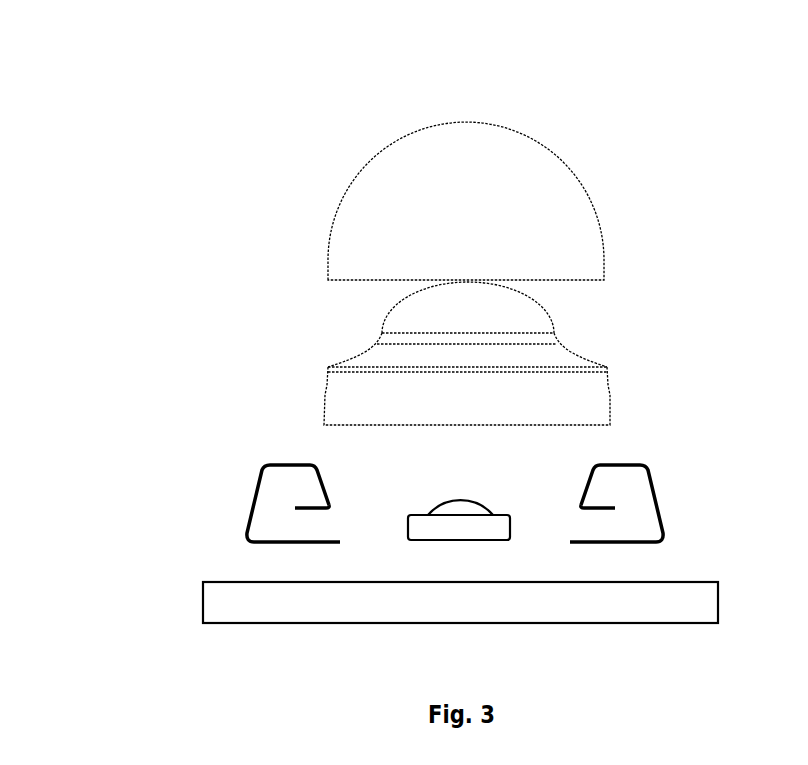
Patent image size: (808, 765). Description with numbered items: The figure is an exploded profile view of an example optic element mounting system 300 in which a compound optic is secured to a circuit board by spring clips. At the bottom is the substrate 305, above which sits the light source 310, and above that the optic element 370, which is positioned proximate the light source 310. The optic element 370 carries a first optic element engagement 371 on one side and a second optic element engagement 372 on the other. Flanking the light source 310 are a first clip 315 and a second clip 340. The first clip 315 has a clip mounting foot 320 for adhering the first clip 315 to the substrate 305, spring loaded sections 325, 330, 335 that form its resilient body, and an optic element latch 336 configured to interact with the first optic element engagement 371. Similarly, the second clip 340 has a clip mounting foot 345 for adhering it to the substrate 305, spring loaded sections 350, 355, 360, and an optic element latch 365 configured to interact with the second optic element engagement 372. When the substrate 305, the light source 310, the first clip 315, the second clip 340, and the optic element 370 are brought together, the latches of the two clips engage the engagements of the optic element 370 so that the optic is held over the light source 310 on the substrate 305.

The optic element mounting system 300 is at (135, 119).
The substrate 305 is at (642, 617).
The light source 310 is at (465, 512).
The first clip 315 is at (264, 496).
The clip mounting foot 320 is at (295, 543).
The spring loaded section 325 is at (248, 503).
The spring loaded section 330 is at (290, 465).
The spring loaded section 335 is at (322, 485).
The optic element latch 336 is at (310, 511).
The second clip 340 is at (632, 491).
The clip mounting foot 345 is at (615, 543).
The spring loaded section 350 is at (657, 492).
The spring loaded section 355 is at (622, 463).
The spring loaded section 360 is at (583, 487).
The optic element latch 365 is at (582, 512).
The optic element 370 is at (528, 193).
The first optic element engagement 371 is at (325, 390).
The second optic element engagement 372 is at (612, 395).